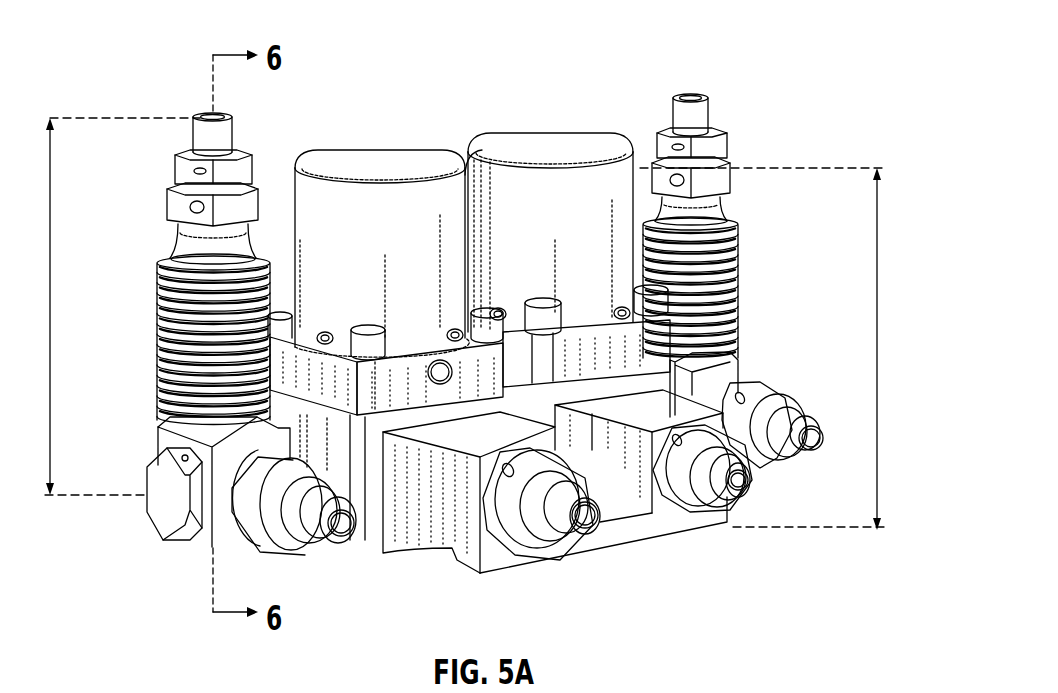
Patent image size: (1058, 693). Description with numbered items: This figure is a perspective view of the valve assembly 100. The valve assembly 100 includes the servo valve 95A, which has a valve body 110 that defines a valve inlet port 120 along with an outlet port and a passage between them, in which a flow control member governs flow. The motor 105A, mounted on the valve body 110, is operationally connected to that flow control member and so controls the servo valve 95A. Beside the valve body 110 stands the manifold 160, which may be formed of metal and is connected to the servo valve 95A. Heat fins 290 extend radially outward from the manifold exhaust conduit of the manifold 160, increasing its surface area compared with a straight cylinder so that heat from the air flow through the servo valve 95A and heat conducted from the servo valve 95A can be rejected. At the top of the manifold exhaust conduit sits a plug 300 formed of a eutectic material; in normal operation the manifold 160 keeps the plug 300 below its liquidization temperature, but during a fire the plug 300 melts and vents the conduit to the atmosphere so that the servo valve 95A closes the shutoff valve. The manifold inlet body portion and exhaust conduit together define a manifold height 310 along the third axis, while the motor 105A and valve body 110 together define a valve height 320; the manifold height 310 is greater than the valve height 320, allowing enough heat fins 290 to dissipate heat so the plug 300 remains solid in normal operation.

The valve assembly 100 is at (442, 336).
The motor 105A is at (396, 151).
The valve body 110 is at (551, 519).
The valve inlet port 120 is at (608, 520).
The servo valve 95A is at (405, 526).
The manifold 160 is at (208, 313).
The heat fins 290 is at (160, 341).
The plug 300 is at (199, 104).
The manifold height 310 is at (50, 285).
The valve height 320 is at (877, 330).